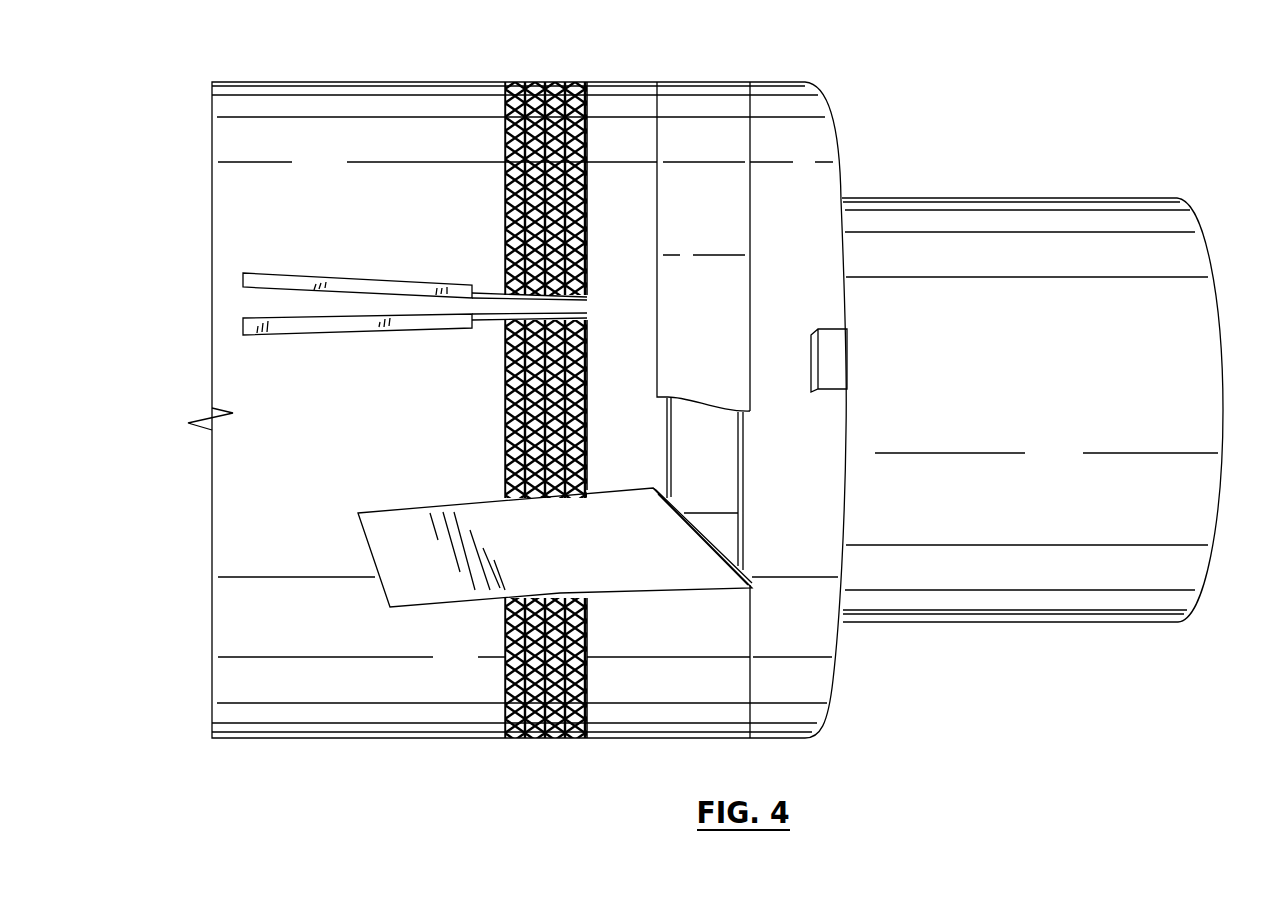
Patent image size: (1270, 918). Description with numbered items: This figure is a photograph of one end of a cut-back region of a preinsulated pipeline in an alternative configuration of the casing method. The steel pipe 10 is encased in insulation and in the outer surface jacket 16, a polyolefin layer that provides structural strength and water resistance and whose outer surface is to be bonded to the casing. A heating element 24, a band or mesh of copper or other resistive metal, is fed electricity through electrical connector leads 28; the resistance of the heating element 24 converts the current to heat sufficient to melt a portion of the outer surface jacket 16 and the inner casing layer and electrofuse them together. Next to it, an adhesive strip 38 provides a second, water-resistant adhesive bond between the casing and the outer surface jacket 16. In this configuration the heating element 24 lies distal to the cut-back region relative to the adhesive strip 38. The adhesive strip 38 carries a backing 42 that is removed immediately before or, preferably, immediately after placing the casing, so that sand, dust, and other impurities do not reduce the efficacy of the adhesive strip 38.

The steel pipe 10 is at (1052, 240).
The outer surface jacket 16 is at (302, 670).
The heating element 24 is at (505, 420).
The electrical connector leads 28 is at (342, 323).
The adhesive strip 38 is at (702, 465).
The backing 42 is at (707, 338).